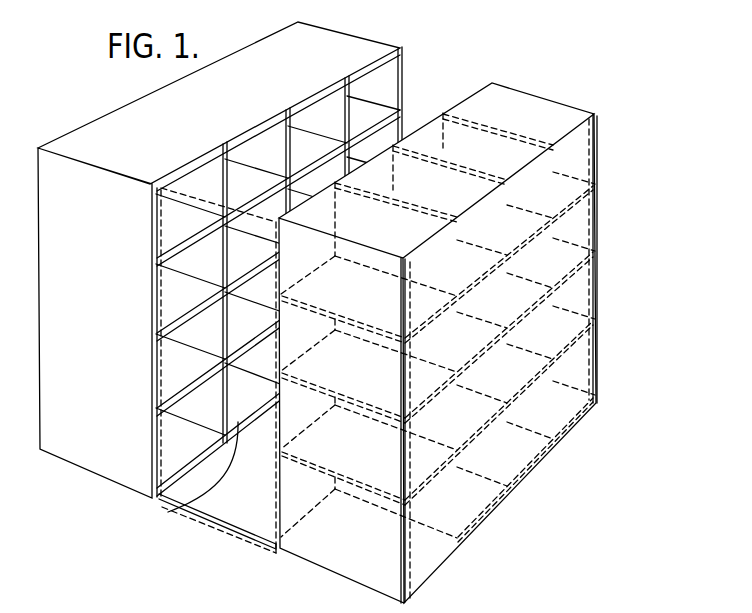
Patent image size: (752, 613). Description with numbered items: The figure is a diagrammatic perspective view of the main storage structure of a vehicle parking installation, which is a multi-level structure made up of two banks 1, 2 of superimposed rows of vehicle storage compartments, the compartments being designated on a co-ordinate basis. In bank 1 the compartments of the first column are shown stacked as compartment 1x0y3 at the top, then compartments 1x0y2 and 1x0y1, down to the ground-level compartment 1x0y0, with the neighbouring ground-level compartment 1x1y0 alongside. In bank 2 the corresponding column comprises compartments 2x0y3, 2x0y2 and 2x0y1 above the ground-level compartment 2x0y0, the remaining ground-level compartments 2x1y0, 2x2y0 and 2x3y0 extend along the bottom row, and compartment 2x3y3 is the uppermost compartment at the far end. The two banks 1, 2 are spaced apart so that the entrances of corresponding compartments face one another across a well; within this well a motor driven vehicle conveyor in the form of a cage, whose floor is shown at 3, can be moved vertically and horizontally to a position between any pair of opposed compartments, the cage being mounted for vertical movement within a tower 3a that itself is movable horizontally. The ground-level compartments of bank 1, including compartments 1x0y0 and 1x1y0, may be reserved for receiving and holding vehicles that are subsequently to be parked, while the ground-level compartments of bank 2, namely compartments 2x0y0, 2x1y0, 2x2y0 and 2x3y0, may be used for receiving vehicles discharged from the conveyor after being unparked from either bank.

The bank of vehicle storage compartments 1 is at (69, 142).
The bank of vehicle storage compartments 2 is at (568, 112).
The floor of the cage 3 is at (238, 513).
The tower 3a is at (272, 512).
The vehicle storage compartment 1x0y3 is at (158, 222).
The vehicle storage compartment 1x0y2 is at (158, 295).
The vehicle storage compartment 1x0y1 is at (163, 378).
The vehicle storage compartment 1x0y0 is at (163, 434).
The vehicle storage compartment 1x1y0 is at (203, 452).
The vehicle storage compartment 2x3y3 is at (511, 107).
The vehicle storage compartment 2x0y3 is at (358, 302).
The vehicle storage compartment 2x0y2 is at (360, 378).
The vehicle storage compartment 2x0y1 is at (360, 466).
The vehicle storage compartment 2x0y0 is at (438, 551).
The vehicle storage compartment 2x1y0 is at (484, 506).
The vehicle storage compartment 2x2y0 is at (524, 466).
The vehicle storage compartment 2x3y0 is at (569, 416).